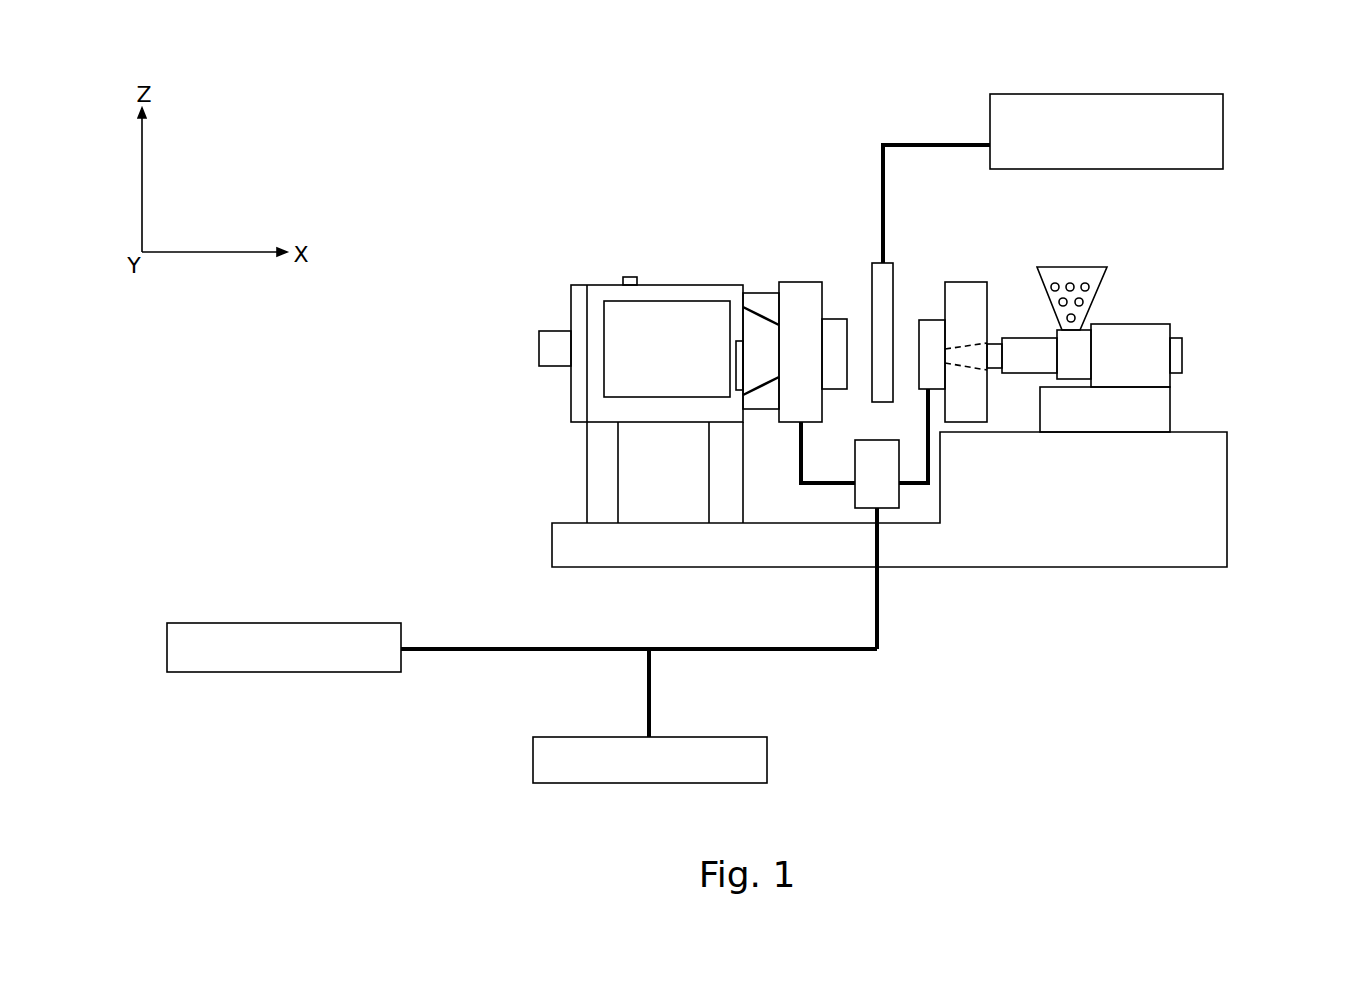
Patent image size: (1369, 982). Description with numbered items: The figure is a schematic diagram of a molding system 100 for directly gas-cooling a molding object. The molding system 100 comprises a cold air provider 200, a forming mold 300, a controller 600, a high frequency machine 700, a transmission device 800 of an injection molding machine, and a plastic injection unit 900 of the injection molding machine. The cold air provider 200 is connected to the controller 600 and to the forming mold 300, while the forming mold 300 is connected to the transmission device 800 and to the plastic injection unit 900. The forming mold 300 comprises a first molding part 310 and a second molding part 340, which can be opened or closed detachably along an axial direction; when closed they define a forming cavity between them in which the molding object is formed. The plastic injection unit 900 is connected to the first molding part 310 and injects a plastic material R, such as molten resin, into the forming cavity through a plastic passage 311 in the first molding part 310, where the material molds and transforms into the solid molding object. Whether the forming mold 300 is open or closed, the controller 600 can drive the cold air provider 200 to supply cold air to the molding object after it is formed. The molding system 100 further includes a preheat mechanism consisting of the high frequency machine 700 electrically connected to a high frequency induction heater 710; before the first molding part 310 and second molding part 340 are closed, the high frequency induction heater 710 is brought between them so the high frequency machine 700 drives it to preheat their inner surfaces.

The molding system 100 is at (1320, 68).
The cold air provider 200 is at (283, 623).
The forming mold 300 is at (854, 150).
The first molding part 310 is at (952, 282).
The plastic passage 311 is at (962, 345).
The second molding part 340 is at (798, 282).
The controller 600 is at (767, 758).
The high frequency machine 700 is at (1223, 145).
The high frequency induction heater 710 is at (883, 402).
The transmission device 800 is at (622, 322).
The plastic injection unit 900 is at (1132, 348).
The plastic material R is at (1072, 290).